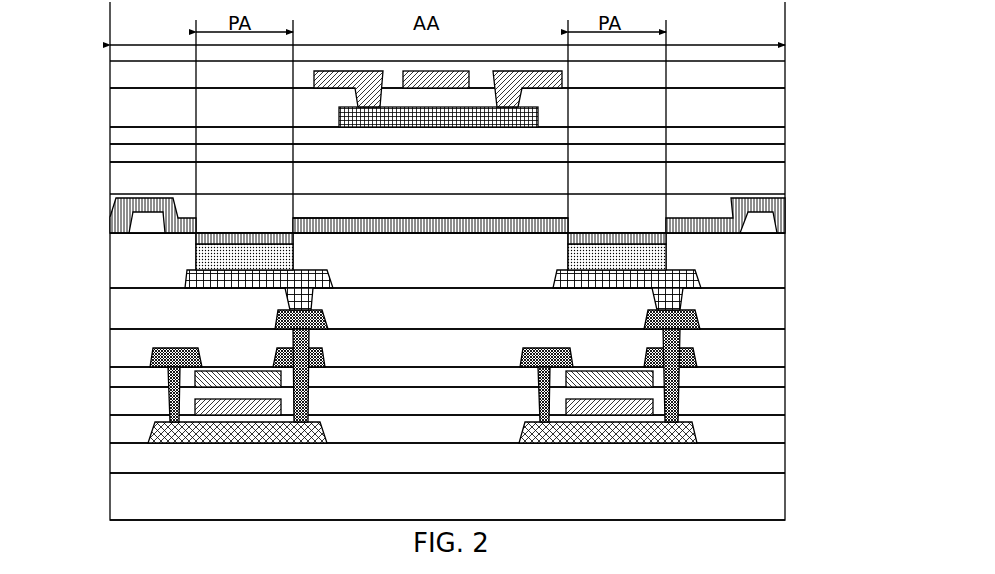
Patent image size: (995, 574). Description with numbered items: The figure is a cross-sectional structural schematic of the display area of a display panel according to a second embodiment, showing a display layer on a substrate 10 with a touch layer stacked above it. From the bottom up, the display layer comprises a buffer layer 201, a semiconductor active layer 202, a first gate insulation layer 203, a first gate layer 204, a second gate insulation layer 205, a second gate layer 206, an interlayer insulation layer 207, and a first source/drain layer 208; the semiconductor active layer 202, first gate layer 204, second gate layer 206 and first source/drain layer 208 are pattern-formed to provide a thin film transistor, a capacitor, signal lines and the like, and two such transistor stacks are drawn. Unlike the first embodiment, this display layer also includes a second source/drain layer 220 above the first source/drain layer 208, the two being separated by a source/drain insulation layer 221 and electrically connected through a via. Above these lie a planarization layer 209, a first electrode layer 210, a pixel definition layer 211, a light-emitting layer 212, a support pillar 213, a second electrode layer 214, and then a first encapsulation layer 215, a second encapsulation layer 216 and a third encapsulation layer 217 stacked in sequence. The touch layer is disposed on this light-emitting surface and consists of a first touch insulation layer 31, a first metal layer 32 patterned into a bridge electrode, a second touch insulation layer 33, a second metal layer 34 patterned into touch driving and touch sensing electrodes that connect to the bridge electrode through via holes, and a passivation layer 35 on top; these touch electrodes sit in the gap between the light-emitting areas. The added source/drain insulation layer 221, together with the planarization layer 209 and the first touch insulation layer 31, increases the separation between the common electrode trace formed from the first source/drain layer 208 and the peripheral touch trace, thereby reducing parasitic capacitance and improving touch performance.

The substrate 10 is at (785, 498).
The buffer layer 201 is at (785, 457).
The semiconductor active layer 202 is at (172, 434).
The first gate insulation layer 203 is at (785, 429).
The first gate layer 204 is at (207, 408).
The second gate insulation layer 205 is at (785, 402).
The second gate layer 206 is at (200, 383).
The interlayer insulation layer 207 is at (785, 375).
The first source/drain layer 208 is at (150, 357).
The planarization layer 209 is at (785, 347).
The first electrode layer 210 is at (200, 280).
The pixel definition layer 211 is at (785, 260).
The light-emitting layer 212 is at (206, 256).
The support pillar 213 is at (785, 223).
The second electrode layer 214 is at (448, 218).
The first encapsulation layer 215 is at (717, 202).
The second encapsulation layer 216 is at (785, 177).
The third encapsulation layer 217 is at (785, 152).
The second source/drain layer 220 is at (280, 323).
The source/drain insulation layer 221 is at (785, 309).
The first touch insulation layer 31 is at (785, 132).
The first metal layer 32 is at (340, 121).
The second touch insulation layer 33 is at (785, 109).
The second metal layer 34 is at (335, 78).
The passivation layer 35 is at (785, 73).